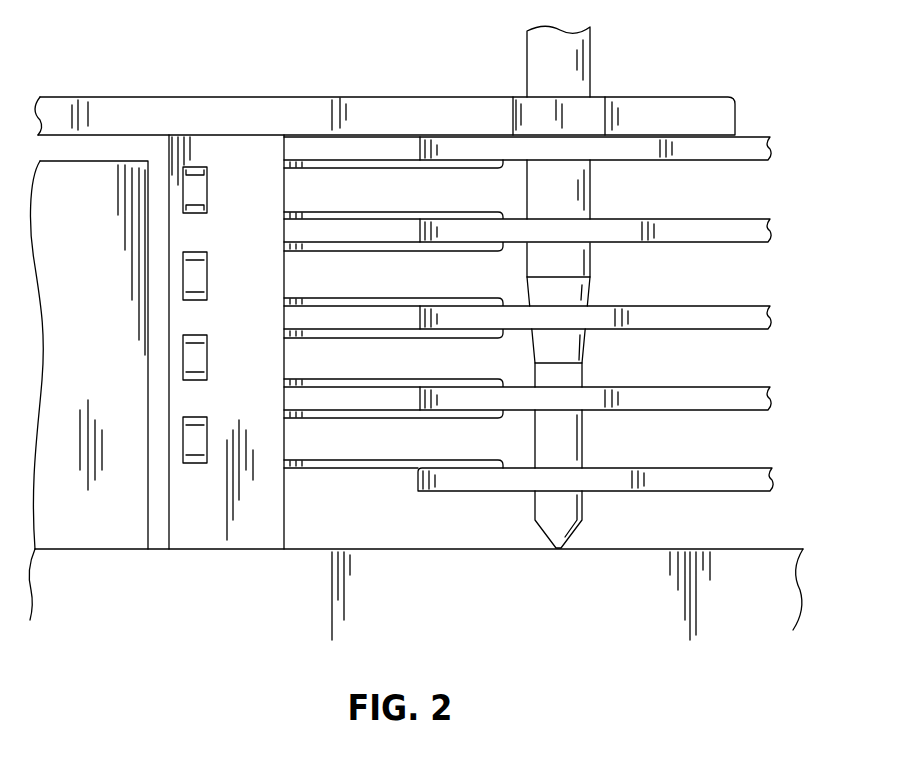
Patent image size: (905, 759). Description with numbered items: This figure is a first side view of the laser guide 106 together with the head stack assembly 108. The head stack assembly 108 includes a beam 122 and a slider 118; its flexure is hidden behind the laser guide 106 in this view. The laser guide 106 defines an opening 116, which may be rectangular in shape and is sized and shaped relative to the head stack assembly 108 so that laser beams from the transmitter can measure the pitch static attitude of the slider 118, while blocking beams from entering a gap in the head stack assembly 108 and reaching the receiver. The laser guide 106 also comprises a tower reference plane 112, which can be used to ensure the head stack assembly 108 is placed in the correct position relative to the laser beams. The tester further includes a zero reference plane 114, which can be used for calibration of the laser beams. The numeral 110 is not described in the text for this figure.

The laser guide 106 is at (197, 532).
The head stack assembly 108 is at (765, 153).
The insulating column 110 is at (223, 540).
The tower reference plane 112 is at (268, 537).
The zero reference plane 114 is at (735, 549).
The opening 116 is at (202, 192).
The slider 118 is at (193, 167).
The beam 122 is at (383, 160).